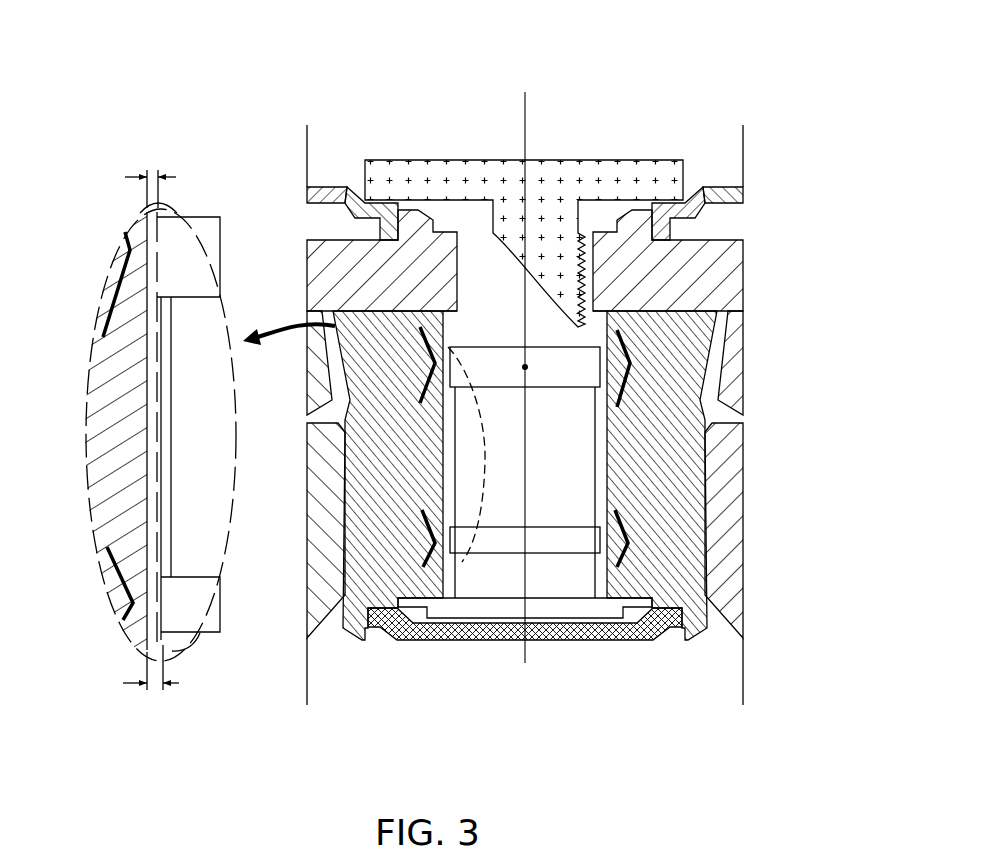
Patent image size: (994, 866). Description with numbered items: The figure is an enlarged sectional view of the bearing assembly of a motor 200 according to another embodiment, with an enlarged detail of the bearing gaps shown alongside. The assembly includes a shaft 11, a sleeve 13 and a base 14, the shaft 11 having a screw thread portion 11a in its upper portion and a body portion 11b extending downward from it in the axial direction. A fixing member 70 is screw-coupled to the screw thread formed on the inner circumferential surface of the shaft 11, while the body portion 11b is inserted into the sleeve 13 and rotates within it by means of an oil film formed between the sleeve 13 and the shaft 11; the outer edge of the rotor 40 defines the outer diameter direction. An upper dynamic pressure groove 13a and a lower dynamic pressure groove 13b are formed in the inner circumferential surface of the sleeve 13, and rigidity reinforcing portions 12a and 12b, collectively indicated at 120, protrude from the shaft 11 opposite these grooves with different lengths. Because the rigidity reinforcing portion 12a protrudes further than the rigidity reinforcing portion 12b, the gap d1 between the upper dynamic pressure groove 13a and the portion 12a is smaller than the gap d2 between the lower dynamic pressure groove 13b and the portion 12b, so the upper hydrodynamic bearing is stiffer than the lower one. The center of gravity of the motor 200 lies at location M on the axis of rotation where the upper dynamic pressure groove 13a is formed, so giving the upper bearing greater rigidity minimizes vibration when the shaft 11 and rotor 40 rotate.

The motor 200 is at (540, 106).
The fixing member 70 is at (626, 157).
The center of gravity location M is at (525, 367).
The rotor 40 is at (727, 297).
The screw thread portion 11a is at (592, 268).
The base 14 is at (730, 556).
The sleeve 13 is at (430, 432).
The upper dynamic pressure groove 13a is at (628, 353).
The lower dynamic pressure groove 13b is at (622, 520).
The body portion 11b is at (597, 443).
The shaft 11 is at (483, 588).
The spacer set 120 is at (387, 476).
The rigidity reinforcing portion 12a is at (553, 365).
The rigidity reinforcing portion 12b is at (553, 537).
The gap d1 is at (165, 181).
The gap d2 is at (165, 667).